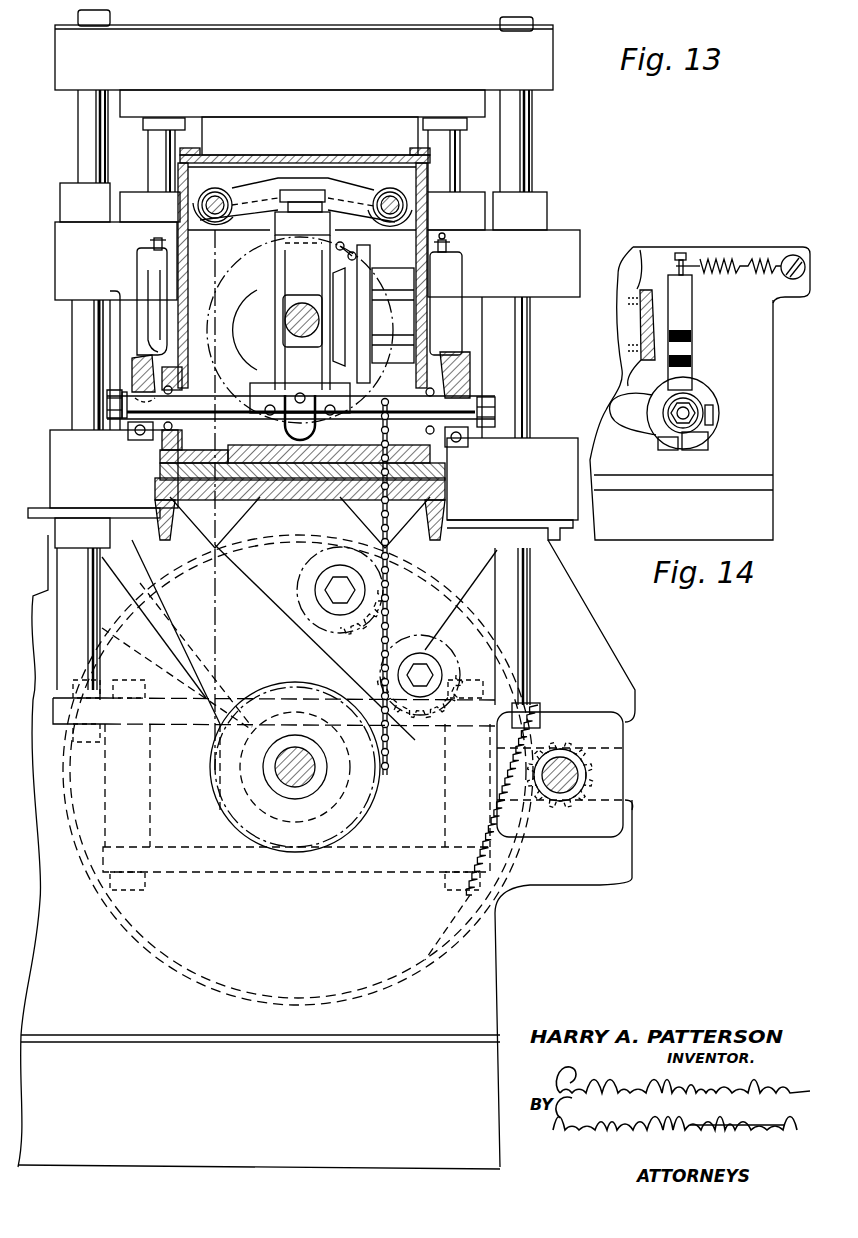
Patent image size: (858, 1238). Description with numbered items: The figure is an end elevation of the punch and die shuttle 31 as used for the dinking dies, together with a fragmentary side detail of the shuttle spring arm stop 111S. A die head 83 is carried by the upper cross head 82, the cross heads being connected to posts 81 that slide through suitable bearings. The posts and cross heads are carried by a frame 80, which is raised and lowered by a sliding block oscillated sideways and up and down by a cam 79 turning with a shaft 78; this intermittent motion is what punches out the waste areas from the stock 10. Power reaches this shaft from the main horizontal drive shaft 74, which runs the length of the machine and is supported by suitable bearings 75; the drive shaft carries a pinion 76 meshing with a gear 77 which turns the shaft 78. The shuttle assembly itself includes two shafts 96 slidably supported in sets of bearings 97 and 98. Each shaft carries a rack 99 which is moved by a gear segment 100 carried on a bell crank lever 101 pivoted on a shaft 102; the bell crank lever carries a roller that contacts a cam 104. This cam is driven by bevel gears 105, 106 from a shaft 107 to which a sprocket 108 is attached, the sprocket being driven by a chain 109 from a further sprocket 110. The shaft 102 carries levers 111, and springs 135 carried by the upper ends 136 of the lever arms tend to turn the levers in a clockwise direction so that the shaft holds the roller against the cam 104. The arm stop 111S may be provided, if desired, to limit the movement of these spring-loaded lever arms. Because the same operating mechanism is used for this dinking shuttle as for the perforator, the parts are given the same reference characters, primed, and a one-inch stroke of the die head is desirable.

In FIG. 13, the cross heads 82 is at (66, 73).
In FIG. 13, the posts 81 is at (80, 148).
In FIG. 13, the punch member 83 is at (283, 137).
In FIG. 13, the shafts 96 is at (215, 191).
In FIG. 13, the rack 99 is at (300, 189).
In FIG. 13, the roll stock 10 is at (340, 164).
In FIG. 13, the shuttle 31 is at (440, 178).
In FIG. 13, the bearings 97 is at (200, 215).
In FIG. 13, the bearings 98 is at (408, 207).
In FIG. 13, the gear segment 100 is at (302, 218).
In FIG. 13, the sprocket 108 is at (240, 264).
In FIG. 13, the bell crank lever 101 is at (275, 283).
In FIG. 13, the shaft 107 is at (304, 303).
In FIG. 13, the bevel gear 106 is at (268, 316).
In FIG. 13, the bevel gear 105 is at (333, 366).
In FIG. 13, the cam 104 is at (362, 255).
In FIG. 13, the levers 111 is at (143, 285).
In FIG. 14, the levers 111 is at (692, 312).
In FIG. 13, the upper ends of lever arms 136 is at (444, 256).
In FIG. 14, the upper ends of lever arms 136 is at (681, 253).
In FIG. 13, the shaft 102 is at (428, 452).
In FIG. 14, the shaft 102 is at (683, 413).
In FIG. 13, the frame 80 is at (168, 606).
In FIG. 13, the sprocket 110 is at (220, 816).
In FIG. 13, the shaft 78 is at (314, 780).
In FIG. 13, the chain 109 is at (375, 634).
In FIG. 13, the cam 79 is at (407, 837).
In FIG. 13, the bearings 75 is at (558, 818).
In FIG. 13, the pinion 76 is at (588, 774).
In FIG. 13, the main horizontal drive shaft 74 is at (566, 793).
In FIG. 13, the gear 77 is at (500, 893).
In FIG. 14, the arm stop 111S is at (639, 279).
In FIG. 14, the springs 135 is at (729, 262).